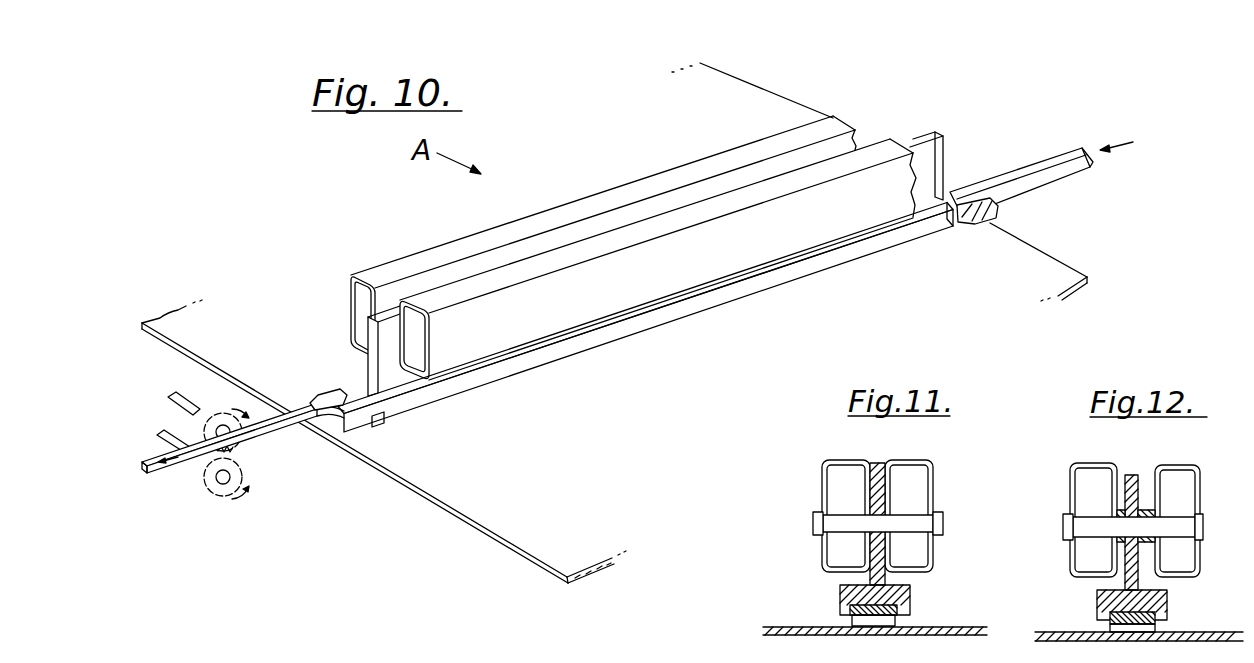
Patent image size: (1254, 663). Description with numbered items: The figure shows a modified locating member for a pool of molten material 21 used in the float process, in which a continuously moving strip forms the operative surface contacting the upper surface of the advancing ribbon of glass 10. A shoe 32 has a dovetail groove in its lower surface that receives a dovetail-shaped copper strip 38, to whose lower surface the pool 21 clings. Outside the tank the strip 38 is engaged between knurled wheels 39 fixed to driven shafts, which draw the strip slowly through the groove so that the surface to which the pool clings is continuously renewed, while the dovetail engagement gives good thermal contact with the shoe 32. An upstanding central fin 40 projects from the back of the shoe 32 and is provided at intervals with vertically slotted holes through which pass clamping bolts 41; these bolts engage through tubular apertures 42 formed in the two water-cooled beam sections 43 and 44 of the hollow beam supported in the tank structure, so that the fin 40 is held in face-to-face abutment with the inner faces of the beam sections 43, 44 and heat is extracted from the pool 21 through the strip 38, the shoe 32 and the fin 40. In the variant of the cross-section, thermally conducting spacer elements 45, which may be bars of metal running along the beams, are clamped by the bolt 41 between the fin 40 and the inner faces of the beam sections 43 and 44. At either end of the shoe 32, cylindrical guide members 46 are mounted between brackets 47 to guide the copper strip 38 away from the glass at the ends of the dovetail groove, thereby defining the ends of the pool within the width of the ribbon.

In FIG. 10, the ribbon of glass 10 is at (202, 349).
In FIG. 11, the ribbon of glass 10 is at (779, 627).
In FIG. 12, the ribbon of glass 10 is at (1050, 633).
In FIG. 11, the pool of molten material 21 is at (903, 621).
In FIG. 12, the pool of molten material 21 is at (1112, 628).
In FIG. 10, the shoe 32 is at (477, 388).
In FIG. 11, the shoe 32 is at (906, 596).
In FIG. 12, the shoe 32 is at (1160, 606).
In FIG. 10, the copper strip 38 is at (1015, 172).
In FIG. 11, the copper strip 38 is at (852, 609).
In FIG. 12, the copper strip 38 is at (1112, 615).
In FIG. 10, the knurled wheels 39 is at (230, 449).
In FIG. 10, the fin 40 is at (367, 359).
In FIG. 11, the fin 40 is at (879, 465).
In FIG. 12, the fin 40 is at (1134, 476).
In FIG. 11, the clamping bolts 41 is at (828, 520).
In FIG. 12, the clamping bolts 41 is at (1180, 527).
In FIG. 11, the tubular apertures 42 is at (913, 511).
In FIG. 12, the tubular apertures 42 is at (1192, 541).
In FIG. 10, the beam section 43 is at (398, 268).
In FIG. 11, the beam section 43 is at (840, 462).
In FIG. 12, the beam section 43 is at (1095, 466).
In FIG. 10, the beam section 44 is at (478, 283).
In FIG. 11, the beam section 44 is at (916, 462).
In FIG. 12, the beam section 44 is at (1184, 466).
In FIG. 12, the spacer elements 45 is at (1150, 515).
In FIG. 10, the guide members 46 is at (326, 427).
In FIG. 10, the brackets 47 is at (375, 425).